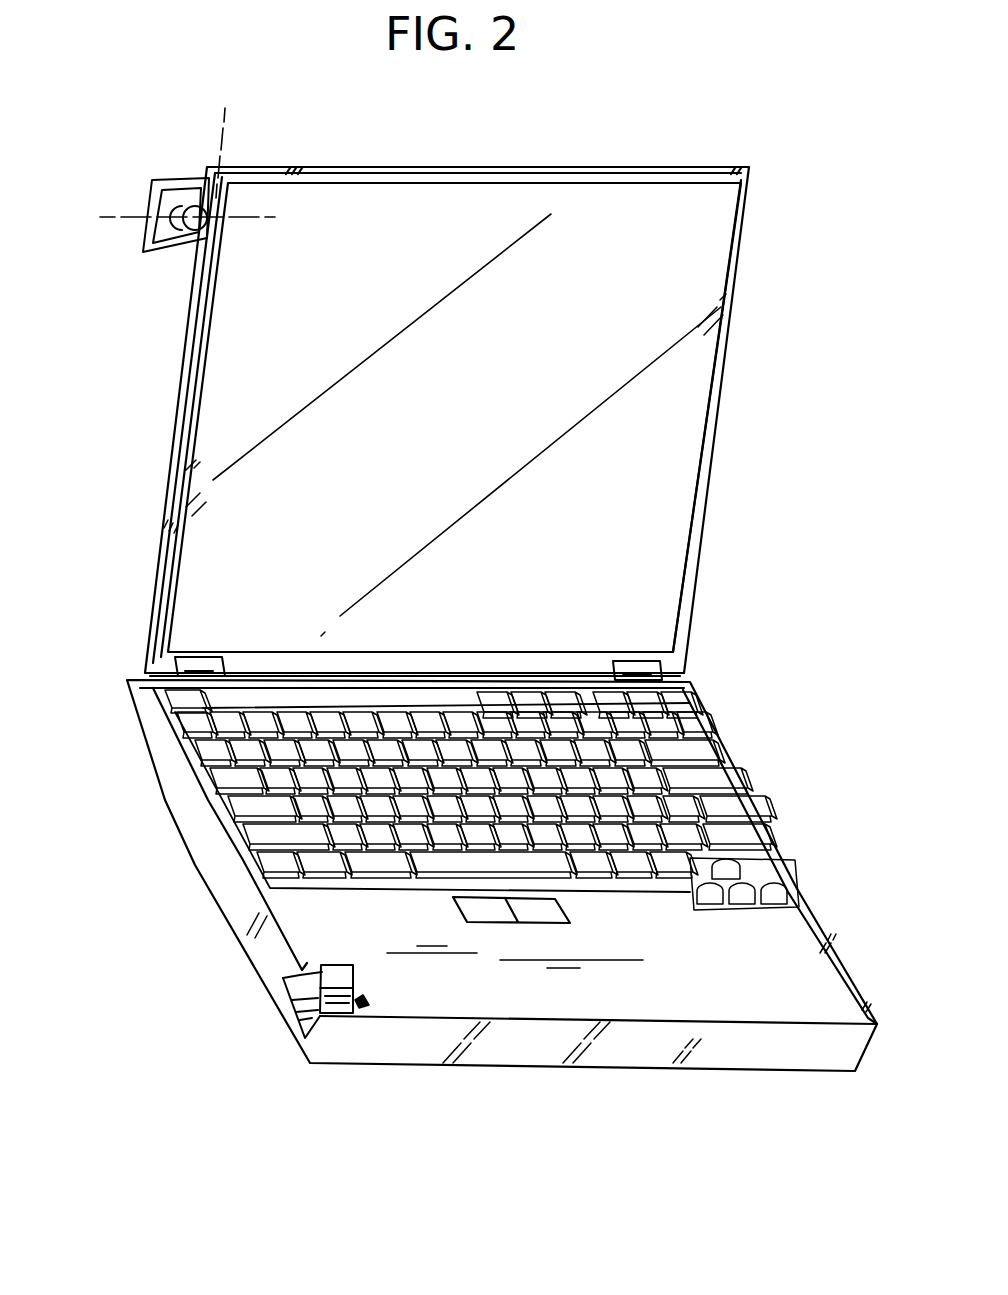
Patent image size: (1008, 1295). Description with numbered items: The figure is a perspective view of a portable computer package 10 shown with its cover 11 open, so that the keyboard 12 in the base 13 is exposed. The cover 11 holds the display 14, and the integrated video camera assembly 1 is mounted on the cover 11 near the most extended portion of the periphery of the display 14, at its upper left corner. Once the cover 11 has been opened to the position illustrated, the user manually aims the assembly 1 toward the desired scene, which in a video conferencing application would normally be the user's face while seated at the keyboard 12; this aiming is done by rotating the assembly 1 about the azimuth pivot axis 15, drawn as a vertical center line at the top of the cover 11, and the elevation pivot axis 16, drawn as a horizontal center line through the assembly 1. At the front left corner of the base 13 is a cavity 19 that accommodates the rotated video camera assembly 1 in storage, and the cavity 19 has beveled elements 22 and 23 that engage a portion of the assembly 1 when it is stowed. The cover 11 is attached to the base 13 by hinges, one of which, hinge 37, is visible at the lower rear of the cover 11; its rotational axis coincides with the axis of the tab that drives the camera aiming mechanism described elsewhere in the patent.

The video camera assembly 1 is at (180, 182).
The portable computer package 10 is at (168, 885).
The cover 11 is at (530, 168).
The keyboard 12 is at (721, 818).
The base 13 is at (797, 876).
The display 14 is at (402, 208).
The azimuth pivot axis 15 is at (223, 147).
The elevation pivot axis 16 is at (127, 217).
The cavity 19 is at (354, 997).
The beveled element 22 is at (363, 1018).
The beveled element 23 is at (338, 962).
The hinge 37 is at (640, 662).